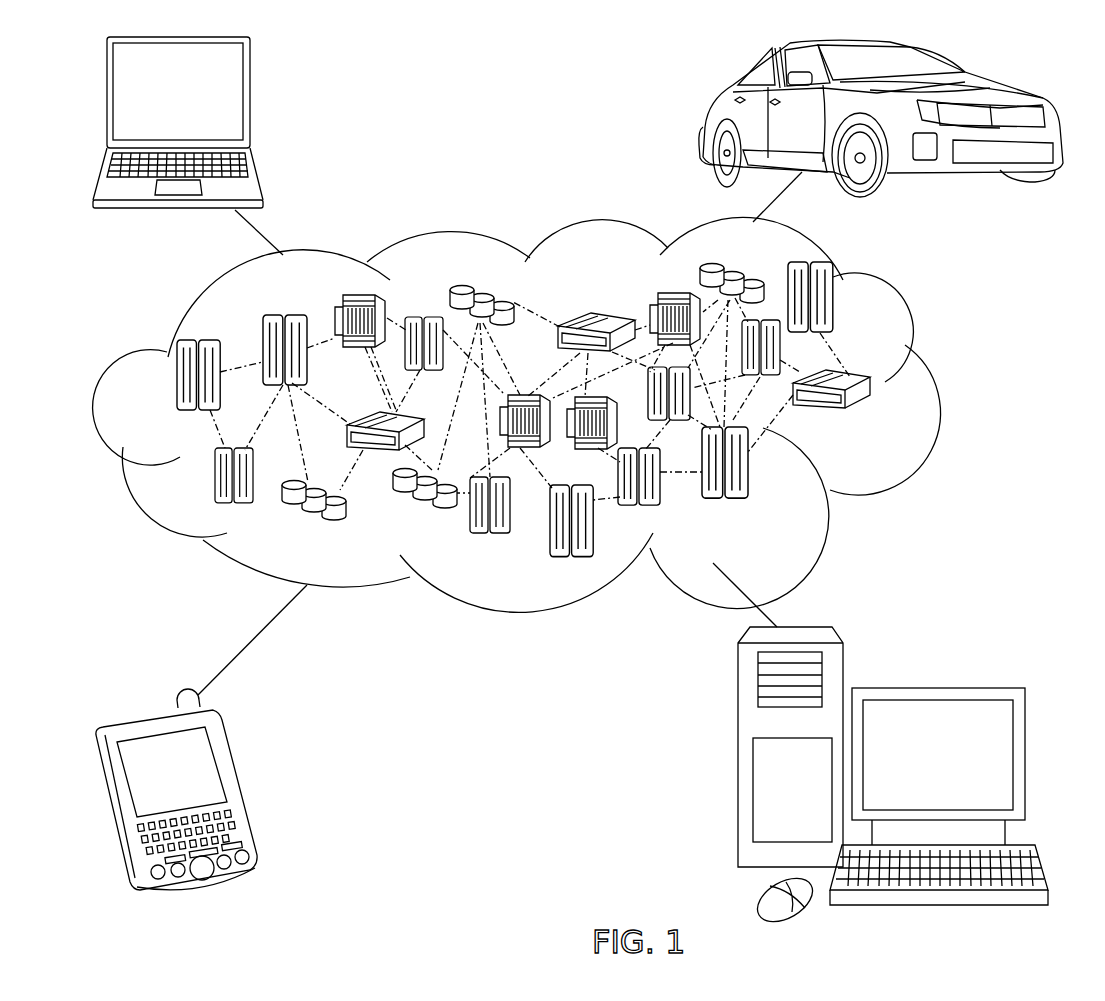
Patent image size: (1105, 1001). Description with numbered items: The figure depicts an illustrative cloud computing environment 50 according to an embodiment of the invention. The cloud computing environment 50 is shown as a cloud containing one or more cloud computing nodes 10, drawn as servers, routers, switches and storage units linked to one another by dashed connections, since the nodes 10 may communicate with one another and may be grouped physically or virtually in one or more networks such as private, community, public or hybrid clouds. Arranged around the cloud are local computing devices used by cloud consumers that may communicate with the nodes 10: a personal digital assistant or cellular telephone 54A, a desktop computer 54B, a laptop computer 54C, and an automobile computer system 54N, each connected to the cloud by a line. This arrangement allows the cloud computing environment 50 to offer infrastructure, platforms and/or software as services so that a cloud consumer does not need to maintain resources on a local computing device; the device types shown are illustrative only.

The cloud computing nodes 10 is at (578, 484).
The cloud computing environment 50 is at (937, 385).
The personal digital assistant or cellular telephone 54A is at (240, 786).
The desktop computer 54B is at (935, 687).
The laptop computer 54C is at (250, 102).
The automobile computer system 54N is at (705, 118).